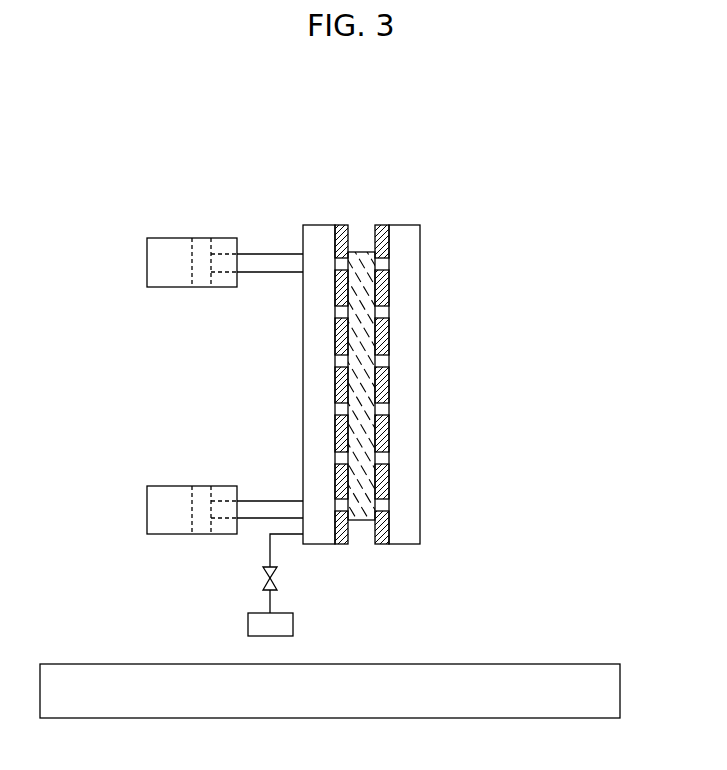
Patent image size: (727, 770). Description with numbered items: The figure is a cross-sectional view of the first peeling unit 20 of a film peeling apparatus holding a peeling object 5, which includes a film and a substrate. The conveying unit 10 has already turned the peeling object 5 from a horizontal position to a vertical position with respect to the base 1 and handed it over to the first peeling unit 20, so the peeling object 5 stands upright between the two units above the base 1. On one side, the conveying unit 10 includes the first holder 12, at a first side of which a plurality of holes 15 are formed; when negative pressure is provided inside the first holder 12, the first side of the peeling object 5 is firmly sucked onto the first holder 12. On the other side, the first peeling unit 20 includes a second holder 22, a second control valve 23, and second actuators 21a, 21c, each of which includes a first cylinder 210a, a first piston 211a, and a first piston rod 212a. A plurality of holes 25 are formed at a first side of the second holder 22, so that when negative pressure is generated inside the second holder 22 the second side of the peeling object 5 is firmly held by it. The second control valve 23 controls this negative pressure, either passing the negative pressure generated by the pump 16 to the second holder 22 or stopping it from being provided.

The base 1 is at (577, 664).
The peeling object 5 is at (361, 522).
The conveying unit 10 is at (433, 378).
The first holder 12 is at (404, 547).
The holes 15 is at (386, 506).
The pump 16 is at (248, 622).
The first peeling unit 20 is at (300, 378).
The second actuator 21a is at (225, 247).
The second actuator 21c is at (180, 465).
The second holder 22 is at (315, 547).
The second control valve 23 is at (262, 578).
The holes 25 is at (335, 455).
The first cylinder 210a is at (172, 288).
The first piston 211a is at (198, 288).
The first piston rod 212a is at (267, 273).